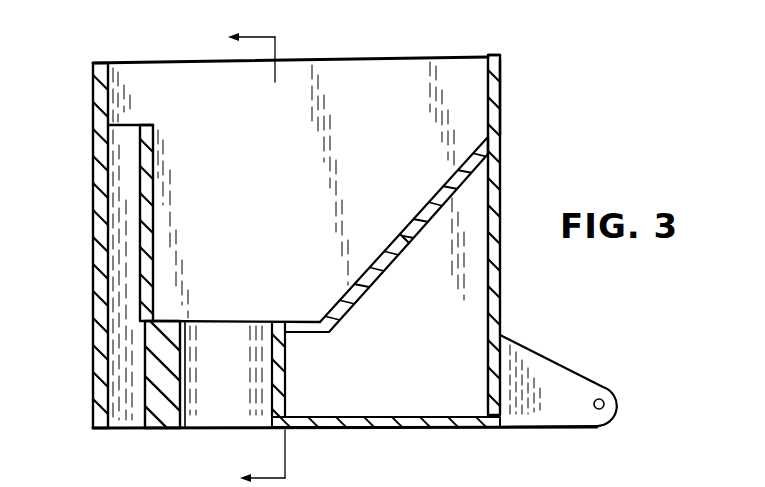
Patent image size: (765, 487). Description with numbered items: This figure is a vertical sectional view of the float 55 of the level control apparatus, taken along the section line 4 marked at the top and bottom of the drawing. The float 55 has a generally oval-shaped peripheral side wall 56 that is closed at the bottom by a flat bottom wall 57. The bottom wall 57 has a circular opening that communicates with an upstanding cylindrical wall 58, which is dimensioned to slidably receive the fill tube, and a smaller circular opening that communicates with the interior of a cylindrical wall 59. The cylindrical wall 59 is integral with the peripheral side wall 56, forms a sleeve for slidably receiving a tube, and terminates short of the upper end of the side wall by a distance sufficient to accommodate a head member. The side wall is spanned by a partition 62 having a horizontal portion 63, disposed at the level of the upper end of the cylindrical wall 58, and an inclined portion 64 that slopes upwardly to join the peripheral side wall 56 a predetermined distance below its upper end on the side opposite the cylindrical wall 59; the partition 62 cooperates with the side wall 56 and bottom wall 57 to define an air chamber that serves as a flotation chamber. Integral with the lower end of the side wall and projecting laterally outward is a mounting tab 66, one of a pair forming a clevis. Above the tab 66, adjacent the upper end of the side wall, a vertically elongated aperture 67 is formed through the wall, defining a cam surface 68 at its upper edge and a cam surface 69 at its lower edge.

The section line 4- 4 is at (239, 256).
The float 55 is at (74, 194).
The peripheral side wall 56 is at (505, 312).
The bottom wall 57 is at (447, 428).
The cylindrical wall 58 is at (273, 385).
The cylindrical wall 59 is at (155, 202).
The partition 62 is at (360, 303).
The horizontal portion 63 is at (294, 321).
The inclined portion 64 is at (398, 235).
The mounting tab 66 is at (562, 373).
The aperture 67 is at (506, 97).
The cam surface 68 is at (494, 77).
The cam surface 69 is at (497, 130).